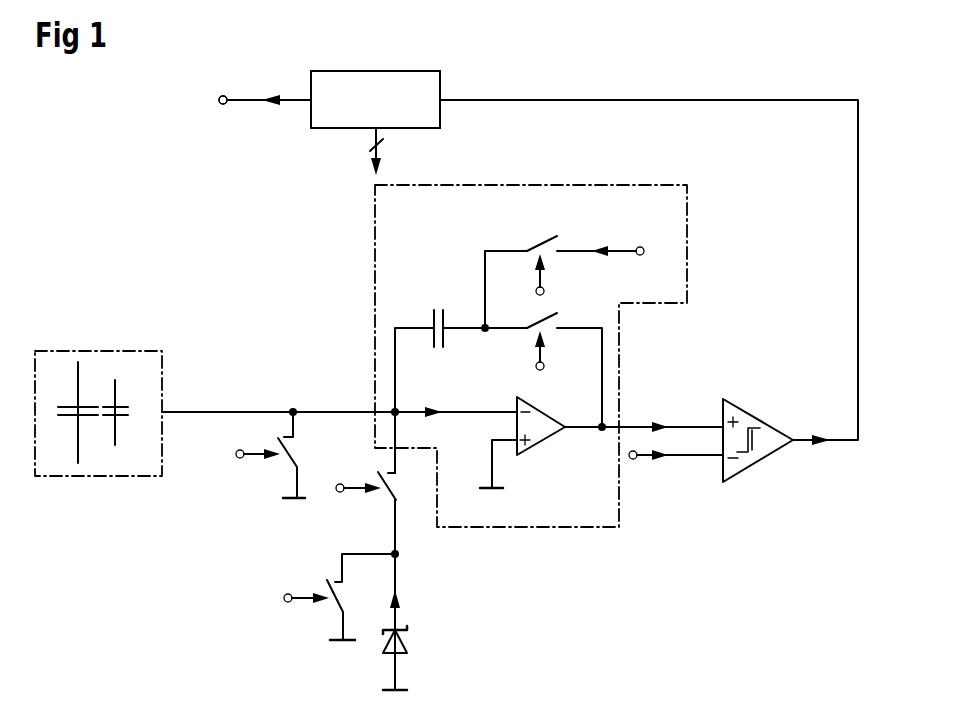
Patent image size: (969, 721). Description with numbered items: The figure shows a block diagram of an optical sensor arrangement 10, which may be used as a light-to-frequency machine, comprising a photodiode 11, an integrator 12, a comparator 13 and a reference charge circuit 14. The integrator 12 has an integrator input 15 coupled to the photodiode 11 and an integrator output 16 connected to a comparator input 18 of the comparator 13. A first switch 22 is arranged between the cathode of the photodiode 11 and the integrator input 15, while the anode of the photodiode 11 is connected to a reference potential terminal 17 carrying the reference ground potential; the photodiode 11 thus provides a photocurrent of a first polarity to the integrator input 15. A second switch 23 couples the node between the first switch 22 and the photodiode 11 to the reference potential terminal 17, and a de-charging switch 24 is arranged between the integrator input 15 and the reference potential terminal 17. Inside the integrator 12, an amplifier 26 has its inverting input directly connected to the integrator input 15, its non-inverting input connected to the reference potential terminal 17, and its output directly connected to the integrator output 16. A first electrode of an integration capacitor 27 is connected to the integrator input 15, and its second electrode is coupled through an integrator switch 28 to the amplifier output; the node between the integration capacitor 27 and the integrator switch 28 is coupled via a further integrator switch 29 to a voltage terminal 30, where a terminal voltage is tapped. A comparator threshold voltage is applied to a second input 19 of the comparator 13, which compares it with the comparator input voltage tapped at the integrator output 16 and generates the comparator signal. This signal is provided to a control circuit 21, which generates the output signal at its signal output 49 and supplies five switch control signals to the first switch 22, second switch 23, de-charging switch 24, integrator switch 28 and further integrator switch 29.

The optical sensor arrangement 10 is at (184, 187).
The photodiode 11 is at (410, 642).
The integrator 12 is at (372, 250).
The comparator 13 is at (760, 415).
The reference charge circuit 14 is at (107, 350).
The integrator input 15 is at (405, 410).
The integrator output 16 is at (600, 424).
The reference potential terminal 17 is at (282, 494).
The comparator input 18 is at (720, 420).
The second input 19 is at (720, 457).
The control circuit 21 is at (447, 85).
The first switch 22 is at (388, 497).
The second switch 23 is at (333, 607).
The de-charging switch 24 is at (287, 462).
The amplifier 26 is at (541, 445).
The integration capacitor 27 is at (436, 309).
The integrator switch 28 is at (530, 322).
The further integrator switch 29 is at (530, 246).
The voltage terminal 30 is at (641, 247).
The signal output 49 is at (305, 104).